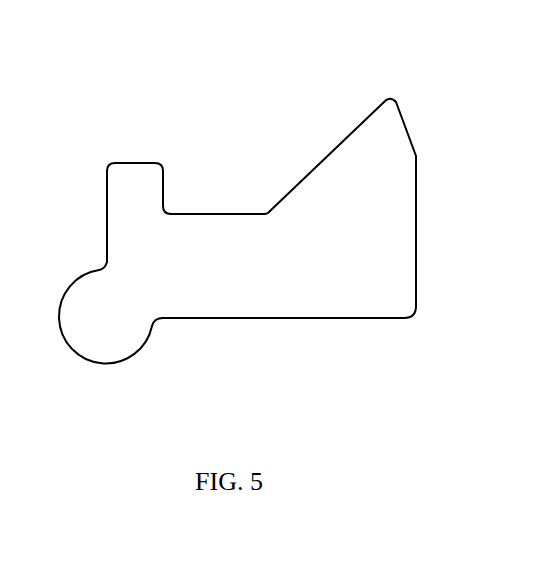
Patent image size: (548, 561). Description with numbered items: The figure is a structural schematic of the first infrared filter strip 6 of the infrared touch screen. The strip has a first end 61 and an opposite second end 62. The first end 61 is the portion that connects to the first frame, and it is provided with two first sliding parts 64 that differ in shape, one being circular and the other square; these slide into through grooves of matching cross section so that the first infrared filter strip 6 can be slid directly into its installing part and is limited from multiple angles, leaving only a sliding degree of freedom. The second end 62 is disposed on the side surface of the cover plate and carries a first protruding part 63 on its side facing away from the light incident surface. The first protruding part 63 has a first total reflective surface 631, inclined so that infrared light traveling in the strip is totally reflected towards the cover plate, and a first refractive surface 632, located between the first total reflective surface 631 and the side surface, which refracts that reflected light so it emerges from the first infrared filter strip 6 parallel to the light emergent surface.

The first infrared filter strip 6 is at (160, 74).
The first end 61 is at (168, 287).
The second end 62 is at (357, 275).
The first protruding part 63 is at (293, 45).
The first total reflective surface 631 is at (347, 133).
The first refractive surface 632 is at (411, 133).
The first sliding parts 64 is at (133, 192).